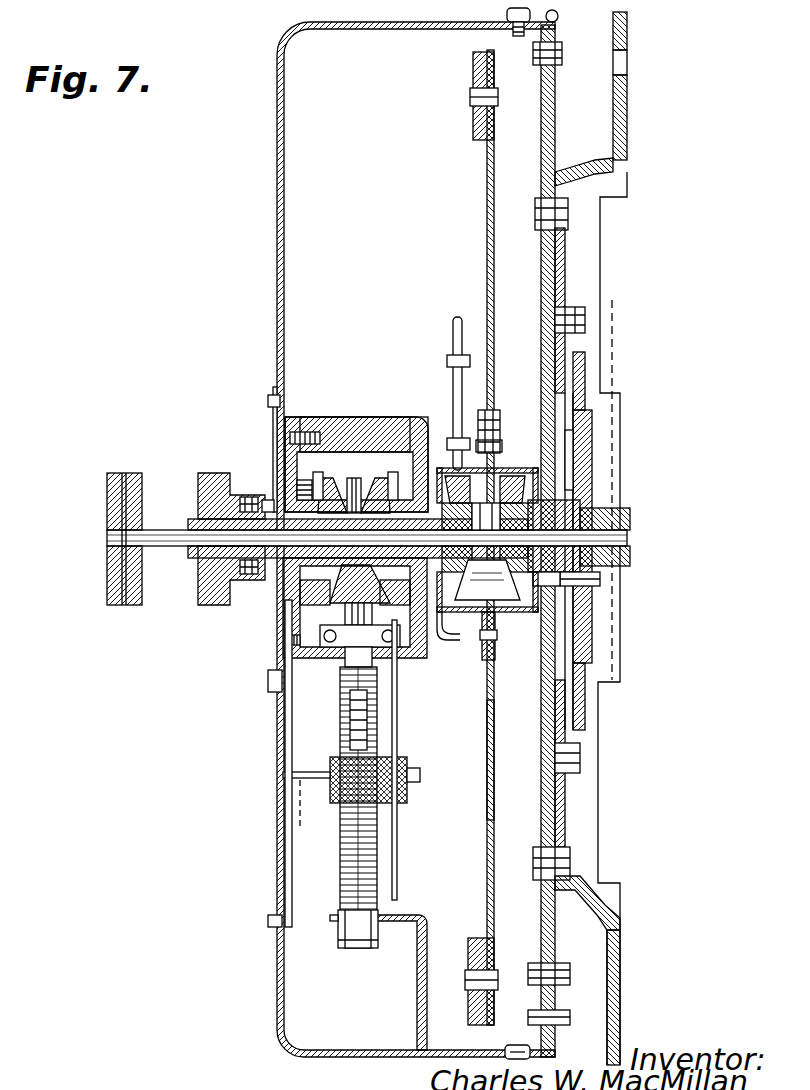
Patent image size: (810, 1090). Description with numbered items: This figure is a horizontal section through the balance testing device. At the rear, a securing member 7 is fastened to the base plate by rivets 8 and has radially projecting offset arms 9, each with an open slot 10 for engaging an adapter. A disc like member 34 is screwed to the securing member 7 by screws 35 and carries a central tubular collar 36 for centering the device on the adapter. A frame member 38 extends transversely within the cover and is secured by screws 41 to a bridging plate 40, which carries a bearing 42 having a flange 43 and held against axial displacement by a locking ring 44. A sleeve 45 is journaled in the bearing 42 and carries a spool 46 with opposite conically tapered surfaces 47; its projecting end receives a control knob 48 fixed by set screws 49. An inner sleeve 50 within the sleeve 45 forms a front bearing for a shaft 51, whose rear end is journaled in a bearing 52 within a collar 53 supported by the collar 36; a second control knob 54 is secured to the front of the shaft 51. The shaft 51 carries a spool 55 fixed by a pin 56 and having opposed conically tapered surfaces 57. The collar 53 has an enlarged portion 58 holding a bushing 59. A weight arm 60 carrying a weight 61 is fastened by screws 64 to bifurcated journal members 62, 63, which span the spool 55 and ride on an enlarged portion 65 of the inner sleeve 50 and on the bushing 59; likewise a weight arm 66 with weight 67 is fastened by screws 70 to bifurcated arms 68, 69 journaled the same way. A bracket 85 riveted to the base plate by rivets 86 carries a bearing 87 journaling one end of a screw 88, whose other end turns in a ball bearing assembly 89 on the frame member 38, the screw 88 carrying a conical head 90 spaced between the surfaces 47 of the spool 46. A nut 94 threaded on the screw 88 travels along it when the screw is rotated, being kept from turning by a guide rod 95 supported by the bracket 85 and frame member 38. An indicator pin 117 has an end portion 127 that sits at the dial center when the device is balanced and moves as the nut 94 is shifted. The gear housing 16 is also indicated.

The securing member 7 is at (630, 130).
The rivets 8 is at (575, 228).
The radially projecting arms 9 is at (627, 100).
The open slot 10 is at (620, 58).
The gear housing 16 is at (356, 464).
The disc like member 34 is at (595, 440).
The screws 35 is at (575, 307).
The tubular collar 36 is at (590, 510).
The frame member 38 is at (355, 417).
The bridging plate 40 is at (297, 480).
The screws 41 is at (305, 432).
The bearing 42 is at (300, 590).
The flange 43 is at (345, 480).
The locking ring 44 is at (255, 575).
The sleeve 45 is at (266, 500).
The spool 46 is at (356, 464).
The conically tapered surfaces 47 is at (393, 478).
The control knob 48 is at (198, 500).
The set screws 49 is at (248, 497).
The inner sleeve 50 is at (198, 580).
The shaft 51 is at (188, 546).
The bearing 52 is at (600, 580).
The collar 53 is at (600, 508).
The second control knob 54 is at (107, 582).
The spool 55 is at (487, 540).
The pin 56 is at (487, 580).
The conically tapered surfaces 57 is at (485, 489).
The enlarged portion 58 is at (590, 470).
The bushing 59 is at (560, 586).
The weight arm 60 is at (487, 228).
The weight 61 is at (473, 124).
The bifurcated journal member 62 is at (453, 460).
The bifurcated journal member 63 is at (503, 448).
The screws 64 is at (494, 410).
The enlarged portion 65 is at (446, 633).
The weight arm 66 is at (494, 798).
The weight 67 is at (468, 945).
The bifurcated arm 68 is at (446, 643).
The bifurcated arm 69 is at (495, 637).
The screws 70 is at (480, 640).
The bracket 85 is at (417, 1012).
The rivets 86 is at (585, 950).
The bearing 87 is at (338, 935).
The screw 88 is at (340, 840).
The ball bearing assembly 89 is at (330, 648).
The conical head 90 is at (300, 618).
The nut 94 is at (330, 762).
The guide rod 95 is at (372, 700).
The indicator pin 117 is at (283, 775).
The end portion 127 is at (311, 805).